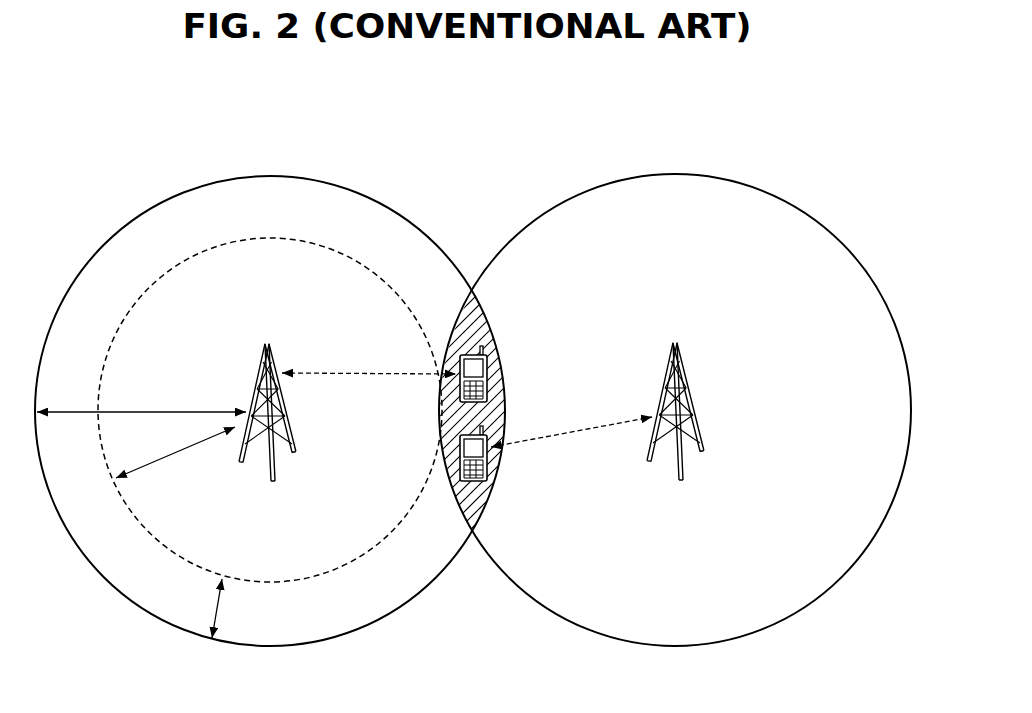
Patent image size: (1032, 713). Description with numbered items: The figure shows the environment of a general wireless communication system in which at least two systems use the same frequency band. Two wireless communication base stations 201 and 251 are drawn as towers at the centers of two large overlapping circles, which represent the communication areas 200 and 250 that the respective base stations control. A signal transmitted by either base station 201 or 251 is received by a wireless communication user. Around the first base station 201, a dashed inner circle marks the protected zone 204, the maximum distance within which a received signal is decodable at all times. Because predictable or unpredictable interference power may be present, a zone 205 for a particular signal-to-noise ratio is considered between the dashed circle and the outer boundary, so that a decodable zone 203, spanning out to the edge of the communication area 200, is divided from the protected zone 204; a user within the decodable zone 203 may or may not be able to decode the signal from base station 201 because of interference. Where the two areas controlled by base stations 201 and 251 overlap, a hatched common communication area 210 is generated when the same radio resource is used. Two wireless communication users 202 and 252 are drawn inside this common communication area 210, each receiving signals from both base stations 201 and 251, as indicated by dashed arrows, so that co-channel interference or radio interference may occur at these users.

The communication area 200 is at (106, 242).
The wireless communication base station 201 is at (279, 466).
The wireless communication user 202 is at (474, 354).
The decodable zone 203 is at (70, 414).
The protected zone 204 is at (170, 456).
The zone for a particular signal-to-noise ratio 205 is at (218, 610).
The common communication area 210 is at (440, 438).
The communication area 250 is at (797, 206).
The wireless communication base station 251 is at (698, 413).
The wireless communication user 252 is at (490, 461).